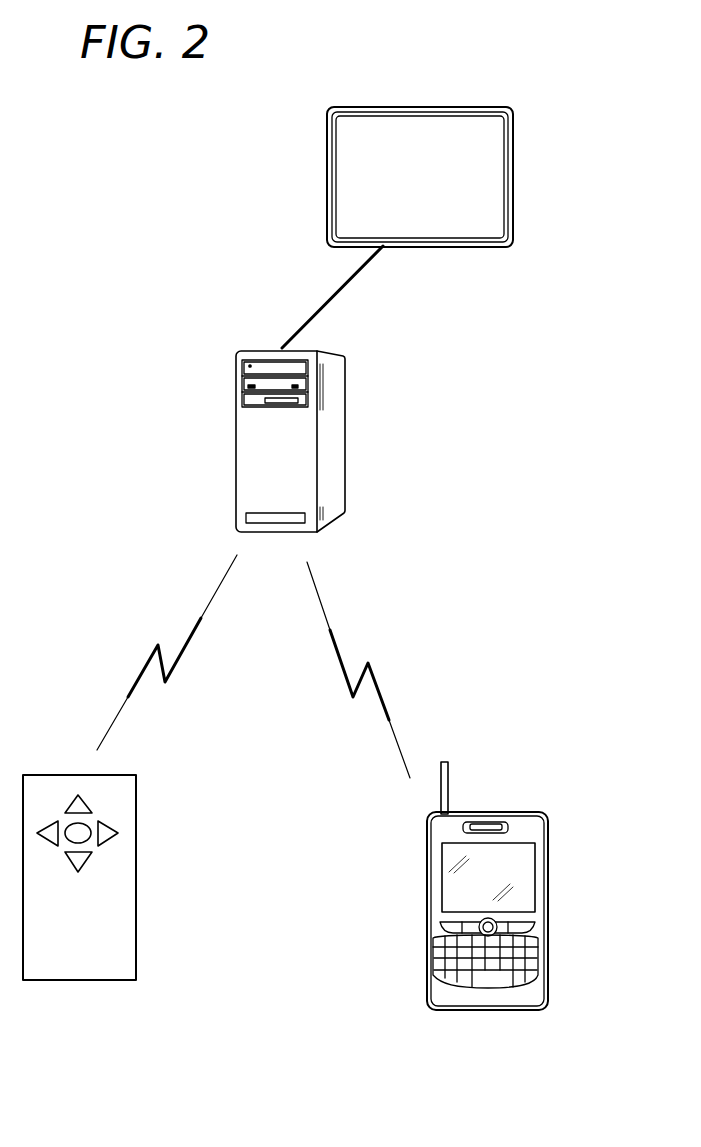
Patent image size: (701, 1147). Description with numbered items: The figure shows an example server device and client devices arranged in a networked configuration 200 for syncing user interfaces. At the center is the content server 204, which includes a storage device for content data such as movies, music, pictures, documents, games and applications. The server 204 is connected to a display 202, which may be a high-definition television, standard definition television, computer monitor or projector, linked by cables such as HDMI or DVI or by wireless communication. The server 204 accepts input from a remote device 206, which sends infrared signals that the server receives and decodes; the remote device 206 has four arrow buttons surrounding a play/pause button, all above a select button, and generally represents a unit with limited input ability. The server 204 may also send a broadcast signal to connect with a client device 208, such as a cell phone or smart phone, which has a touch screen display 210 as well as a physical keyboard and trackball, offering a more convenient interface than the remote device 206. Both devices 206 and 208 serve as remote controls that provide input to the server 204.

The networked configuration 200 is at (205, 200).
The display 202 is at (513, 170).
The content server 204 is at (341, 439).
The remote device 206 is at (137, 885).
The client device 208 is at (545, 968).
The touch screen display 210 is at (522, 864).